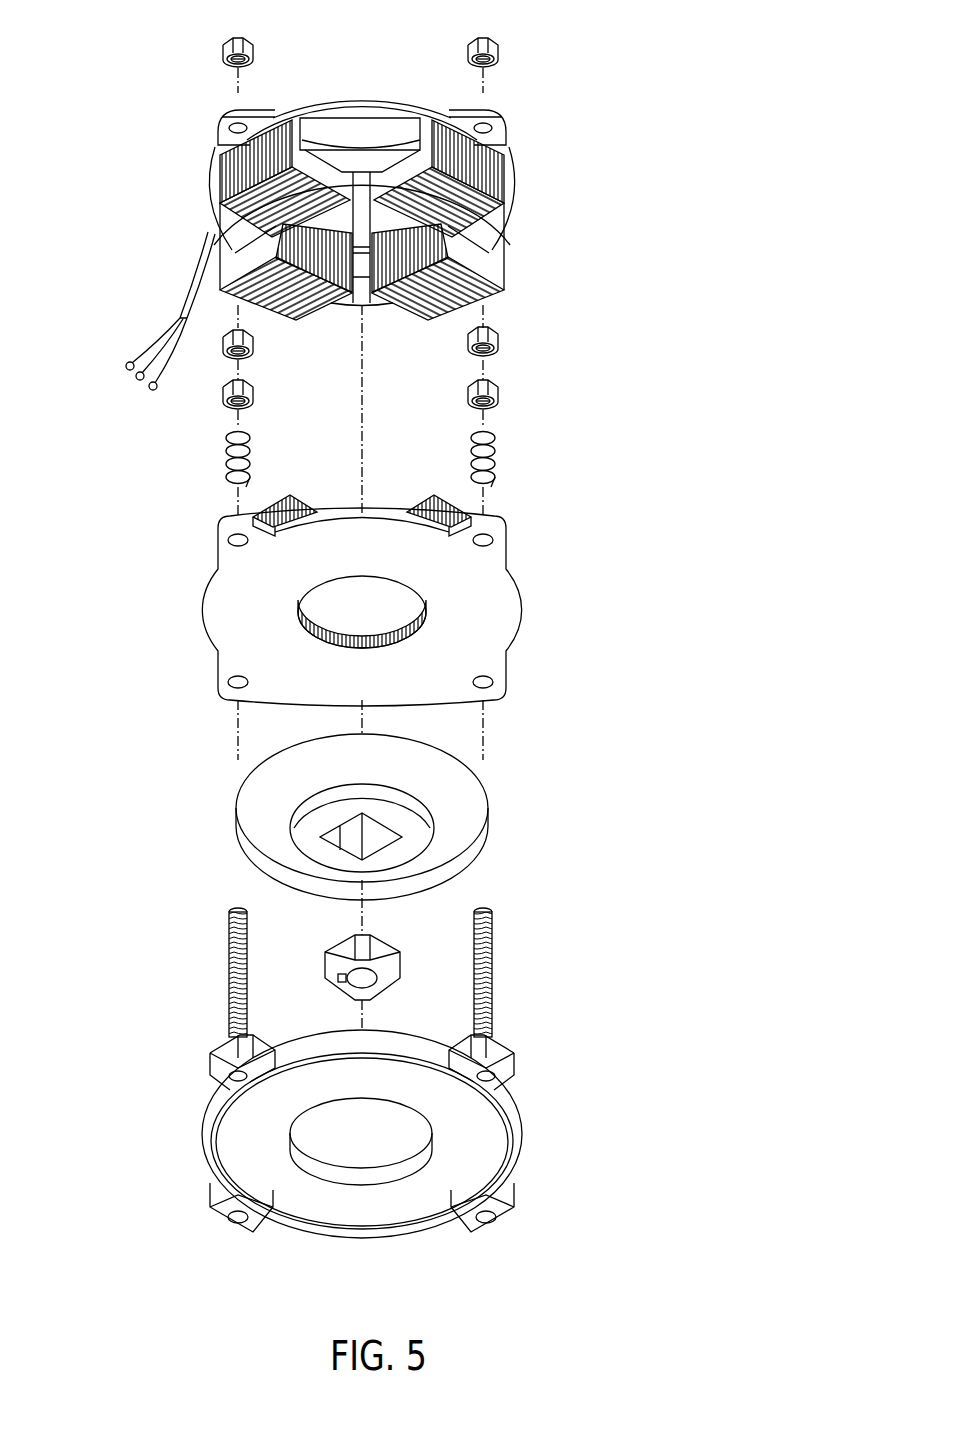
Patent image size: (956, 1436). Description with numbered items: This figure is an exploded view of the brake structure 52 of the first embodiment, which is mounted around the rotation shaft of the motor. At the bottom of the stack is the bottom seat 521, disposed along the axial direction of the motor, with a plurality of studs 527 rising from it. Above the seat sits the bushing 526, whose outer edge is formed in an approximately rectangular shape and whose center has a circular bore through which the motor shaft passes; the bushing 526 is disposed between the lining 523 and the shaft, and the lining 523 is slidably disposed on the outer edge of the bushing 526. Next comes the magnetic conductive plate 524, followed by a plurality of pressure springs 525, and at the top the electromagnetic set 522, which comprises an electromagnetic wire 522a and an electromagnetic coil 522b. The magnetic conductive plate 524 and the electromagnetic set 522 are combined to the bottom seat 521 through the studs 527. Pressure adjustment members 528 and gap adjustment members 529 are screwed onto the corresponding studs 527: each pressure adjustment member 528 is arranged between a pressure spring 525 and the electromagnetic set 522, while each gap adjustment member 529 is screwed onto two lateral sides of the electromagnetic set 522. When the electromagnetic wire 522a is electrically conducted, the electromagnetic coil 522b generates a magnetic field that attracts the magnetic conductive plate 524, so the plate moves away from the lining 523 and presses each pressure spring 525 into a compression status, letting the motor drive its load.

The brake structure 52 is at (700, 74).
The bottom seat 521 is at (227, 1130).
The electromagnetic set 522 is at (281, 245).
The electromagnetic wire 522a is at (228, 192).
The electromagnetic coil 522b is at (164, 311).
The lining 523 is at (465, 797).
The magnetic conductive plate 524 is at (507, 622).
The pressure springs 525 is at (498, 450).
The bushing 526 is at (387, 950).
The studs 527 is at (490, 1010).
The pressure adjustment members 528 is at (498, 390).
The gap adjustment members 529 is at (497, 47).